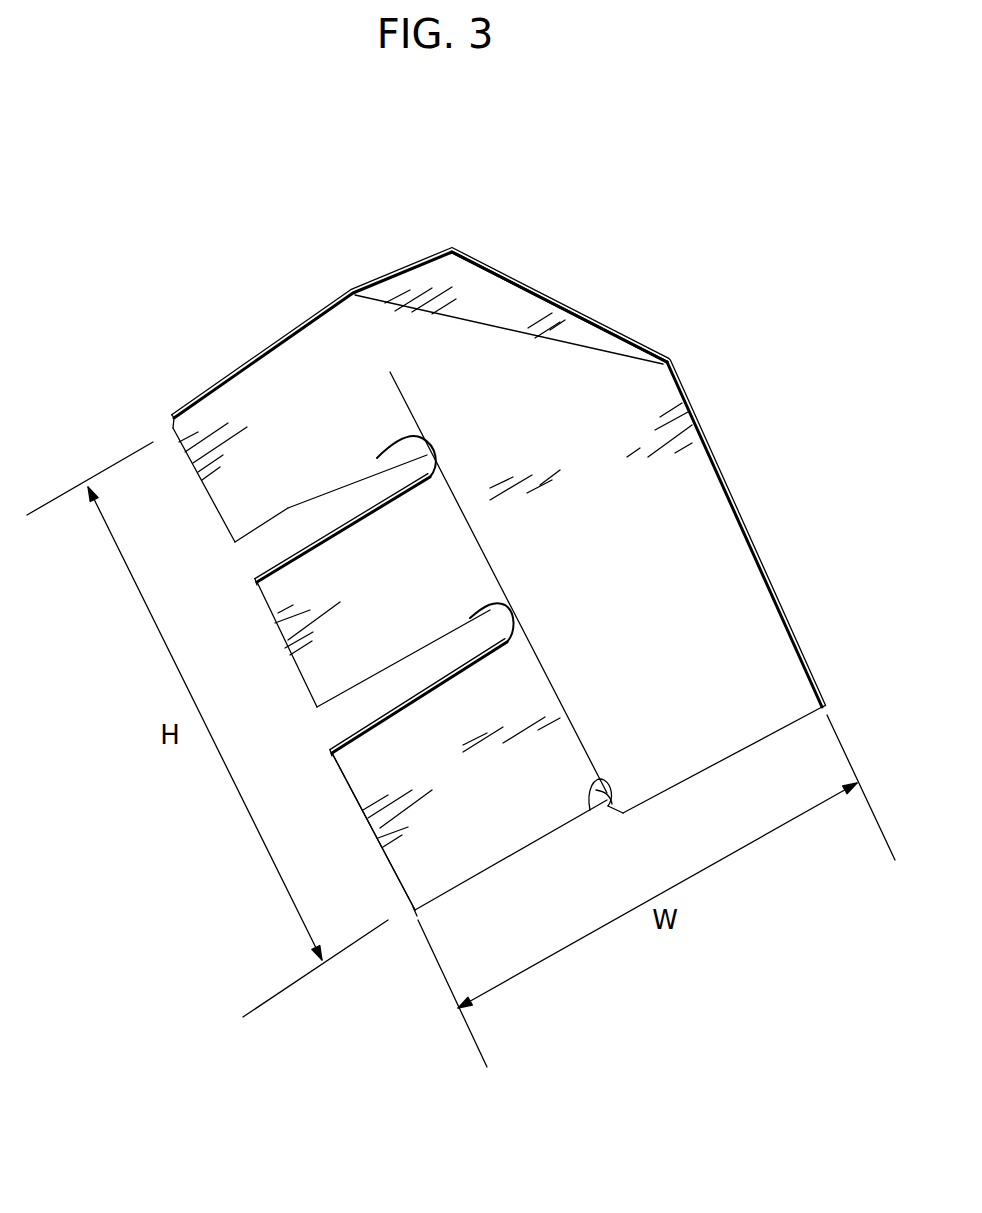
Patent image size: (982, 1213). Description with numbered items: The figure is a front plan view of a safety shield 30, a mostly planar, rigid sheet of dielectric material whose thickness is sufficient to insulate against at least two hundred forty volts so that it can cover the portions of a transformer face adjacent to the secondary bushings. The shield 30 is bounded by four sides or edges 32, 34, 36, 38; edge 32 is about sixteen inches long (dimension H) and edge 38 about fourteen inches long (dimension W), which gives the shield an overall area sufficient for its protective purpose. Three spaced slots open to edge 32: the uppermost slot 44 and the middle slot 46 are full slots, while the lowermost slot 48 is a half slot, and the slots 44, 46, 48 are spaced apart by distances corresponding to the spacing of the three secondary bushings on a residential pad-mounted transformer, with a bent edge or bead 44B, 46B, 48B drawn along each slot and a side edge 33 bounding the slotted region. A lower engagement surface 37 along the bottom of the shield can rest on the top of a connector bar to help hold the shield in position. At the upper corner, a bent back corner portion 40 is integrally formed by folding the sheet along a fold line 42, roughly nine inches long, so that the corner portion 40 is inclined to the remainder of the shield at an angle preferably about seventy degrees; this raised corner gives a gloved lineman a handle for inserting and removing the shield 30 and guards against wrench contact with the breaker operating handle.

The safety shield 30 is at (335, 335).
The edge 32 is at (388, 865).
The side edge of body 33 is at (418, 420).
The edge 34 is at (247, 366).
The edge 36 is at (752, 532).
The lower engagement surface 37 is at (595, 790).
The edge 38 is at (690, 778).
The bent back corner portion 40 is at (565, 333).
The fold line 42 is at (472, 319).
The uppermost slot 44 is at (285, 510).
The first tab bead 44B is at (383, 455).
The middle slot 46 is at (365, 680).
The second tab bead 46B is at (470, 620).
The lowermost slot 48 is at (540, 838).
The third tab bead 48B is at (593, 808).